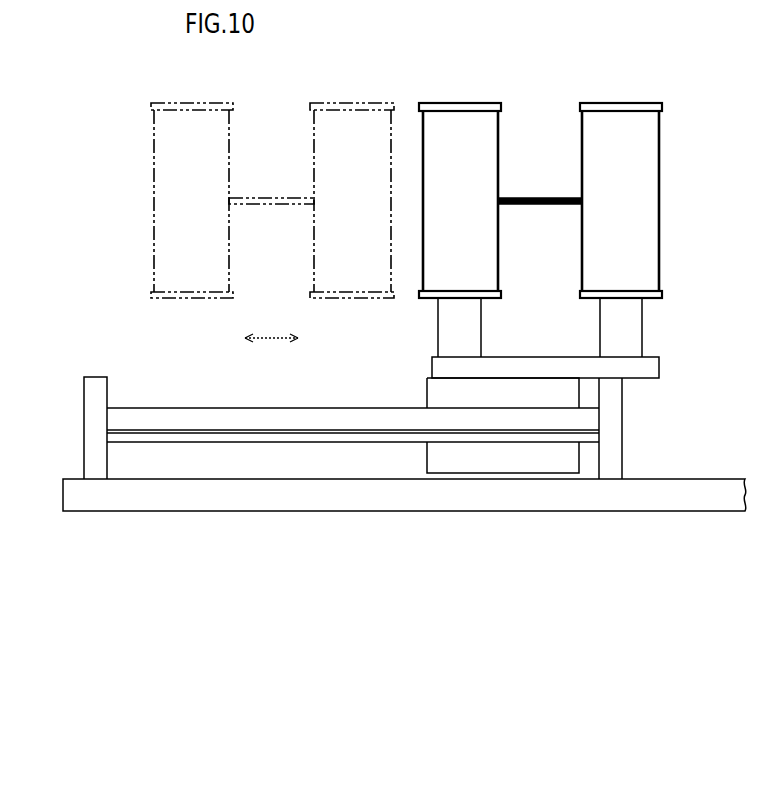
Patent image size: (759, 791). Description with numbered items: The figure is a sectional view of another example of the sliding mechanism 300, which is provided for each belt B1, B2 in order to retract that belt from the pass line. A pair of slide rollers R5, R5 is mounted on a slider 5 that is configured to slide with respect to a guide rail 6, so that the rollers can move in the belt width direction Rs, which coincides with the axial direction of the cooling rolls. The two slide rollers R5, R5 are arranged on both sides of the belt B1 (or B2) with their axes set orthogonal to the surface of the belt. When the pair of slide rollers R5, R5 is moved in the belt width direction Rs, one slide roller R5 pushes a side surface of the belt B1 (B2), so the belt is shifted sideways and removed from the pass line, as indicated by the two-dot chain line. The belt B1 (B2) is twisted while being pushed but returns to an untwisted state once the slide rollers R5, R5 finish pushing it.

The slide roller R5 is at (153, 118).
The belt B1 is at (405, 160).
The belt B2 is at (563, 197).
The belt width direction Rs is at (271, 326).
The slider 5 is at (533, 462).
The guide rail 6 is at (222, 438).
The sliding mechanism 300 is at (365, 528).